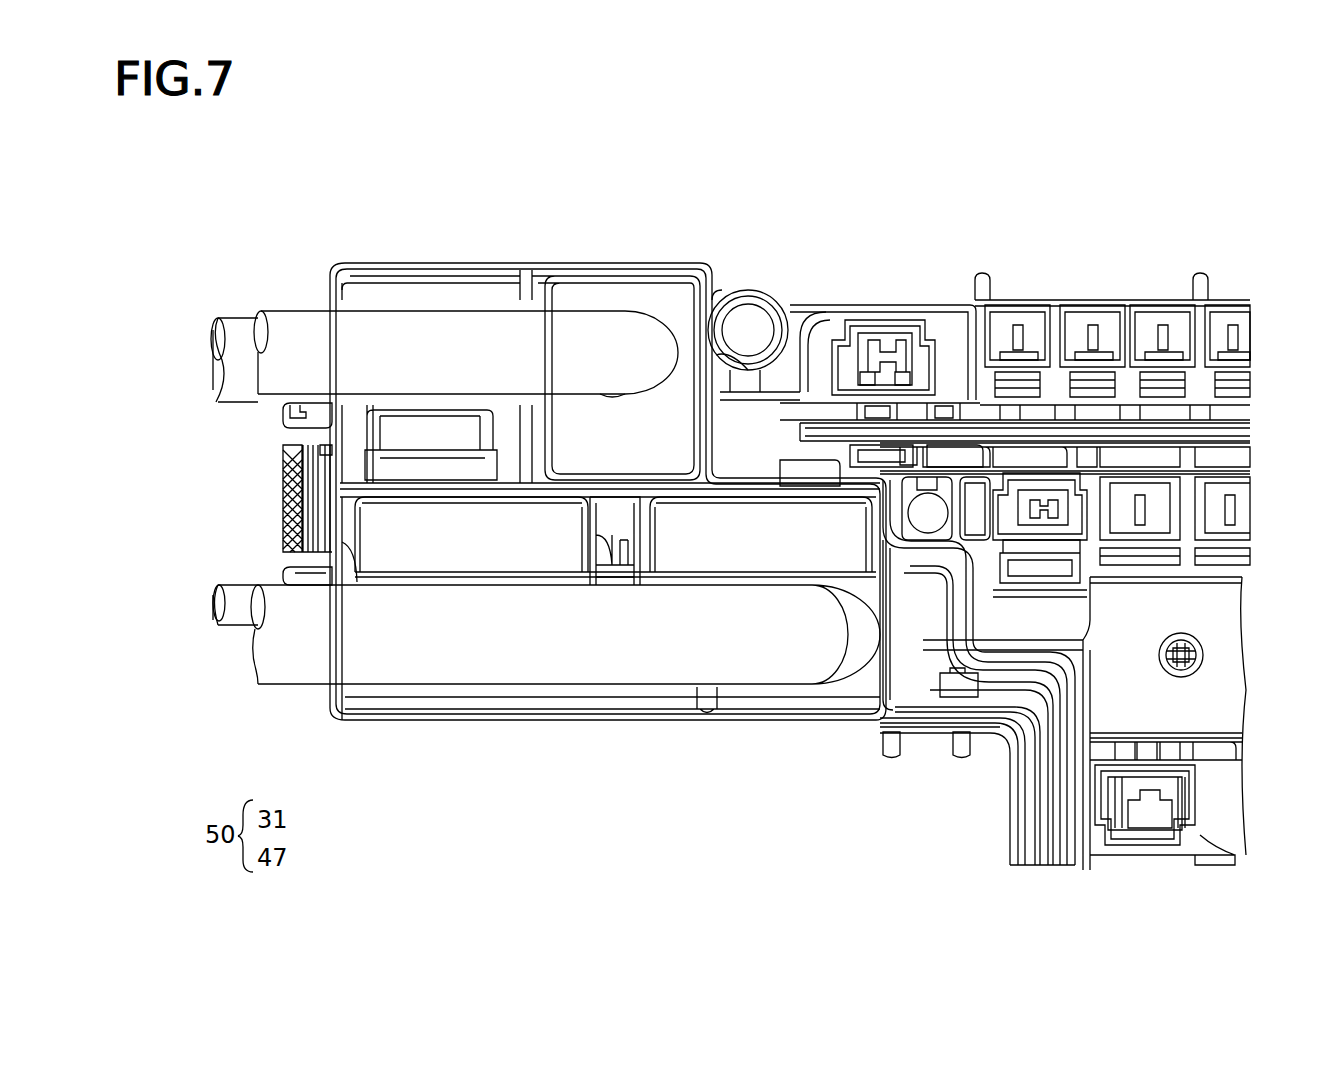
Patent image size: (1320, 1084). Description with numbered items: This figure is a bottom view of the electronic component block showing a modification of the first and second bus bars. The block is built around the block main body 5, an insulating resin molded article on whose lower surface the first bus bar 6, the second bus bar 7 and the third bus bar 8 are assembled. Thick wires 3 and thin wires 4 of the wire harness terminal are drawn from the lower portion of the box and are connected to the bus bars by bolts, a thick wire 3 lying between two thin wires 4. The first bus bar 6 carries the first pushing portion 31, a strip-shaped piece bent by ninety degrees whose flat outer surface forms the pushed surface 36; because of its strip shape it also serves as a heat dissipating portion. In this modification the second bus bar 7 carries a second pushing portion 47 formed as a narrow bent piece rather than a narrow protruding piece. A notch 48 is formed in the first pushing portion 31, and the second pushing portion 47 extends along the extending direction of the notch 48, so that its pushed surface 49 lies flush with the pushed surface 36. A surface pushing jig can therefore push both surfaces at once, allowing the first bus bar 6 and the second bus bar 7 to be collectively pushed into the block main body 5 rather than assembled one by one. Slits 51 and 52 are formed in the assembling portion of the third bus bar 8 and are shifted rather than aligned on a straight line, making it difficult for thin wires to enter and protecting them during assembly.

The thick wire 3 is at (405, 330).
The thin wire 4 is at (228, 618).
The block main body 5 is at (1158, 289).
The first bus bar 6 is at (1047, 880).
The second bus bar 7 is at (1290, 688).
The third bus bar 8 is at (1290, 432).
The first pushing portion 31 is at (400, 555).
The pushed surface 36 is at (760, 555).
The second pushing portion 47 is at (610, 523).
The notch 48 is at (600, 555).
The pushed surface 49 is at (625, 535).
The slit 51 is at (757, 395).
The slit 52 is at (776, 363).